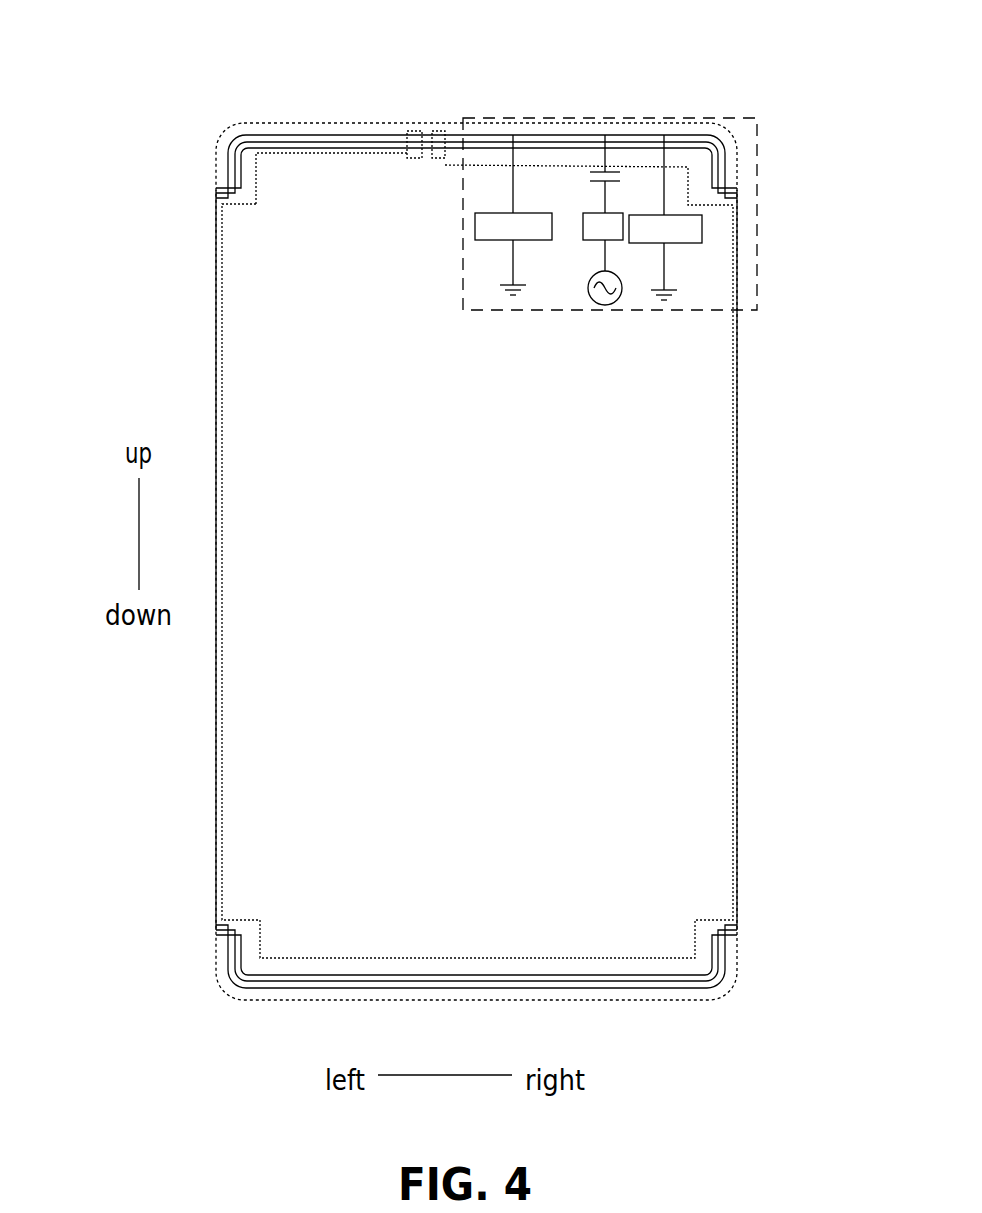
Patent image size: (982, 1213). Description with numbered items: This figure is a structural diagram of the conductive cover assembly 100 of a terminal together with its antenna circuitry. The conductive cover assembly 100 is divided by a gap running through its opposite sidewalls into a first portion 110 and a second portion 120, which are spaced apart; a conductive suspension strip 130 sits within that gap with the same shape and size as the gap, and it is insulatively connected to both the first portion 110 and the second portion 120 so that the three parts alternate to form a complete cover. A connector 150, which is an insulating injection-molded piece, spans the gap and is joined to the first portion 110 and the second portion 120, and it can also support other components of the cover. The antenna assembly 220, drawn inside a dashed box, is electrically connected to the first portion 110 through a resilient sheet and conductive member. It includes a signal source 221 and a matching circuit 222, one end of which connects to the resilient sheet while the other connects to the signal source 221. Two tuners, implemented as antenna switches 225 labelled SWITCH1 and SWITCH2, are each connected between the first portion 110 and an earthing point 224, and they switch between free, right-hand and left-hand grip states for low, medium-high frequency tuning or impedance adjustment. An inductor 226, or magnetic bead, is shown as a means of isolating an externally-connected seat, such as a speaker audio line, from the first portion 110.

The conductive cover assembly 100 is at (120, 92).
The first portion 110 is at (325, 130).
The second portion 120 is at (248, 408).
The conductive suspension strip 130 is at (237, 172).
The connector 150 is at (412, 132).
The antenna assembly 220 is at (757, 142).
The signal source 221 is at (598, 300).
The matching circuit 222 is at (595, 243).
The earthing point 224 is at (512, 292).
The antenna switch 225 is at (480, 242).
The inductor 226 is at (615, 172).